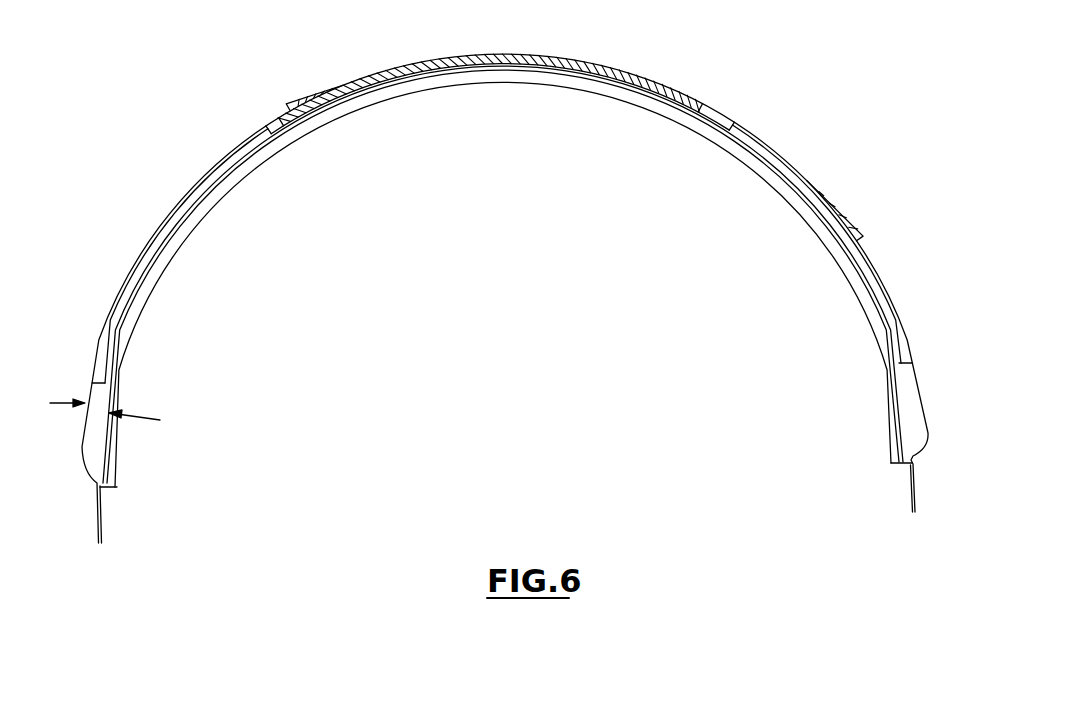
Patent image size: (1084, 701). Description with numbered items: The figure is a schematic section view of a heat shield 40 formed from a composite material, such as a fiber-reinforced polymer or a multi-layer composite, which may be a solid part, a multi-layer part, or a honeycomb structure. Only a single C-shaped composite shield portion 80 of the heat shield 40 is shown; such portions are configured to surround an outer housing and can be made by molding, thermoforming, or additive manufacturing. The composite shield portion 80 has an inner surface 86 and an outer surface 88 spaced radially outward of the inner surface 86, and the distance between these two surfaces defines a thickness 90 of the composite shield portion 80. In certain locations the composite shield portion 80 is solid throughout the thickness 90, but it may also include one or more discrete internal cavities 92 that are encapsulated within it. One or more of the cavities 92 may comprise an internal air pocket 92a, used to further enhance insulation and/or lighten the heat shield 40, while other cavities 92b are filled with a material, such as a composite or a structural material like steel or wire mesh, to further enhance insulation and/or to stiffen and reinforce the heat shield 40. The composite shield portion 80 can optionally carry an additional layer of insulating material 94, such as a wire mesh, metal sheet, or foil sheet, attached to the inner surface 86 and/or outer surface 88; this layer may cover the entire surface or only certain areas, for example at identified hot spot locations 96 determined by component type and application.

The heat shield 40 is at (767, 80).
The composite shield portion 80 is at (914, 366).
The inner surface 86 is at (123, 368).
The outer surface 88 is at (107, 334).
The thickness 90 is at (143, 422).
The internal cavities 92 is at (477, 82).
The internal air pocket 92a is at (140, 288).
The filled cavity 92b is at (590, 72).
The additional layer of insulating material 94 is at (318, 98).
The hot spot locations 96 is at (346, 76).